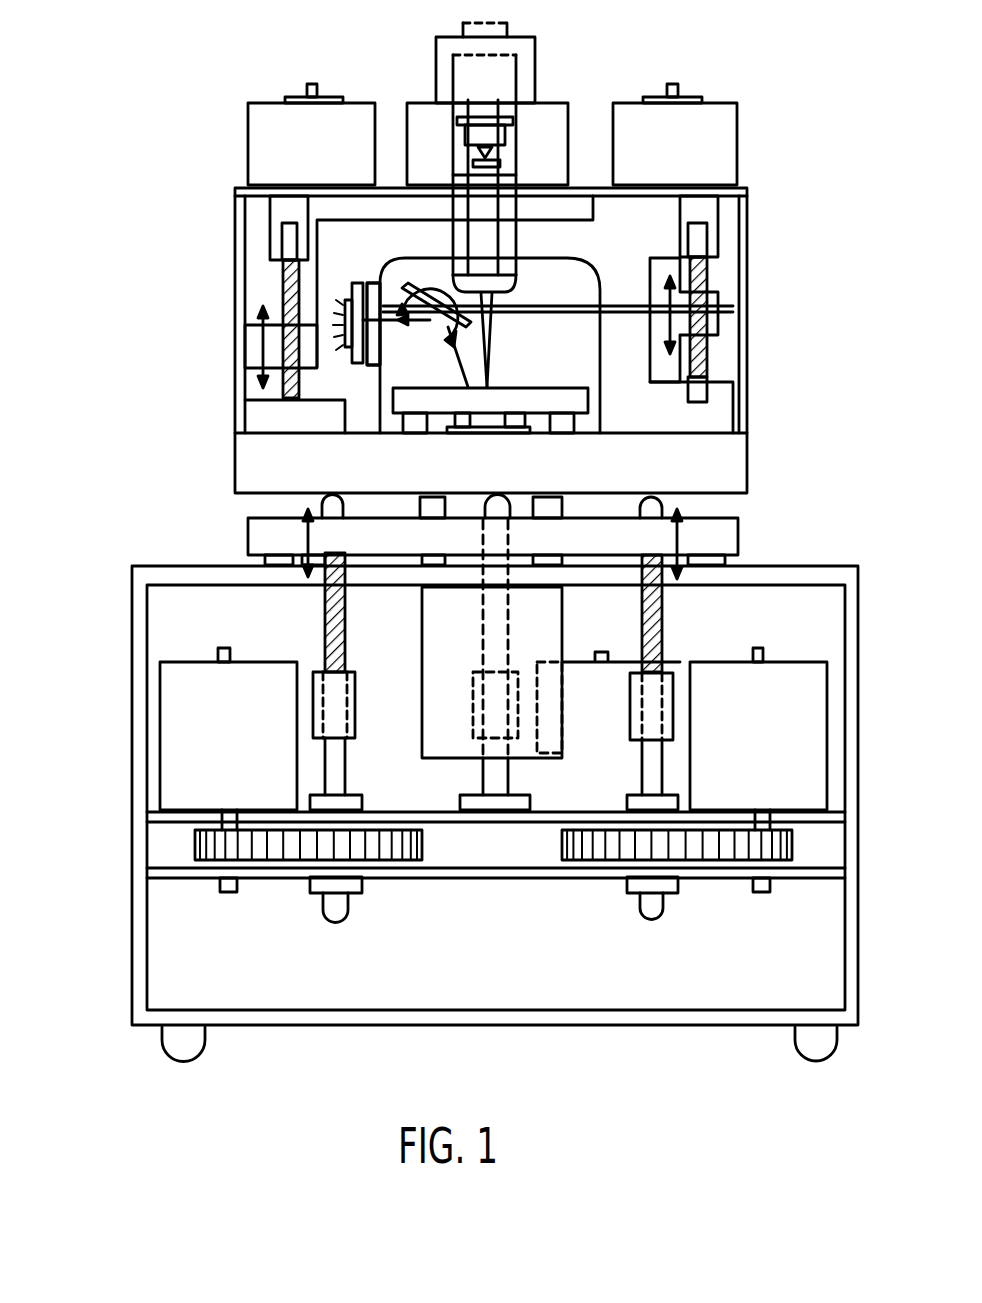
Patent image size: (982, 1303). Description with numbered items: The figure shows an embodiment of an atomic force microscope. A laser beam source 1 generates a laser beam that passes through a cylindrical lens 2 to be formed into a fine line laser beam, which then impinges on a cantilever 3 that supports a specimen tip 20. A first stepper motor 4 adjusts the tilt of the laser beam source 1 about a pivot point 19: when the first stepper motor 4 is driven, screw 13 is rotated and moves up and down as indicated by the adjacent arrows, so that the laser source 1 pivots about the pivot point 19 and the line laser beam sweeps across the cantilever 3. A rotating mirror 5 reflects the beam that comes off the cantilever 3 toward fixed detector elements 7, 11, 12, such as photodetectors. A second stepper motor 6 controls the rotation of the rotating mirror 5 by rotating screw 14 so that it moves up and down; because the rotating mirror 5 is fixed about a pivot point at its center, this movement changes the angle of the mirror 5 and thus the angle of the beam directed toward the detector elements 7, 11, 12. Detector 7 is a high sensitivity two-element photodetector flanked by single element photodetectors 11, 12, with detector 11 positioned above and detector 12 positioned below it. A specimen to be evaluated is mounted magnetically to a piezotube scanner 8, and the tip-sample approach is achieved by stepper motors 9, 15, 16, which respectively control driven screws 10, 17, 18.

The laser beam source 1 is at (467, 117).
The cylindrical lens 2 is at (380, 283).
The cantilever 3 is at (533, 407).
The first stepper motor 4 is at (268, 132).
The rotating mirror 5 is at (460, 303).
The second stepper motor 6 is at (698, 145).
The detector 7 is at (350, 342).
The piezotube scanner 8 is at (507, 493).
The stepper motor 9 is at (762, 740).
The driven screw 10 is at (653, 633).
The detector 11 is at (343, 290).
The detector 12 is at (360, 347).
The screw 13 is at (283, 278).
The screw 14 is at (710, 275).
The stepper motor 15 is at (607, 773).
The stepper motor 16 is at (235, 737).
The driven screw 17 is at (497, 603).
The driven screw 18 is at (325, 633).
The pivot point 19 is at (487, 182).
The specimen tip 20 is at (517, 407).